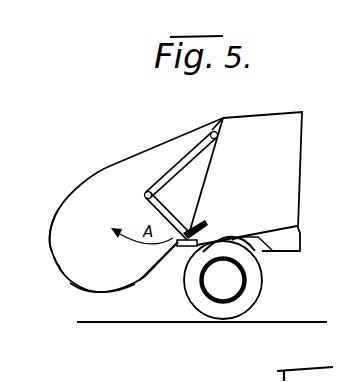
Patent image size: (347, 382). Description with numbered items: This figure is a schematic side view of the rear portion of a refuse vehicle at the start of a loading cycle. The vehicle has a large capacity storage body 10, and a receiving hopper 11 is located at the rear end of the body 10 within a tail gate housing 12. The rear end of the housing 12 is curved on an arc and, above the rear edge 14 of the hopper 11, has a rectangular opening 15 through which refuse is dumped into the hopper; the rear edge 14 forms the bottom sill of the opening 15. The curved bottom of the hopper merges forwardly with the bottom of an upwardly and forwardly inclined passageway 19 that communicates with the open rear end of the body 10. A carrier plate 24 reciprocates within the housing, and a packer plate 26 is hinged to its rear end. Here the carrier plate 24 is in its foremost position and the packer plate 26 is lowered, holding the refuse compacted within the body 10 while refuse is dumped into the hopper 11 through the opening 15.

The storage body 10 is at (267, 128).
The receiving hopper 11 is at (100, 286).
The tail gate housing 12 is at (138, 165).
The rear edge of the hopper 14 is at (57, 266).
The rectangular opening 15 is at (64, 212).
The passageway 19 is at (157, 253).
The carrier plate 24 is at (191, 161).
The packer plate 26 is at (177, 216).